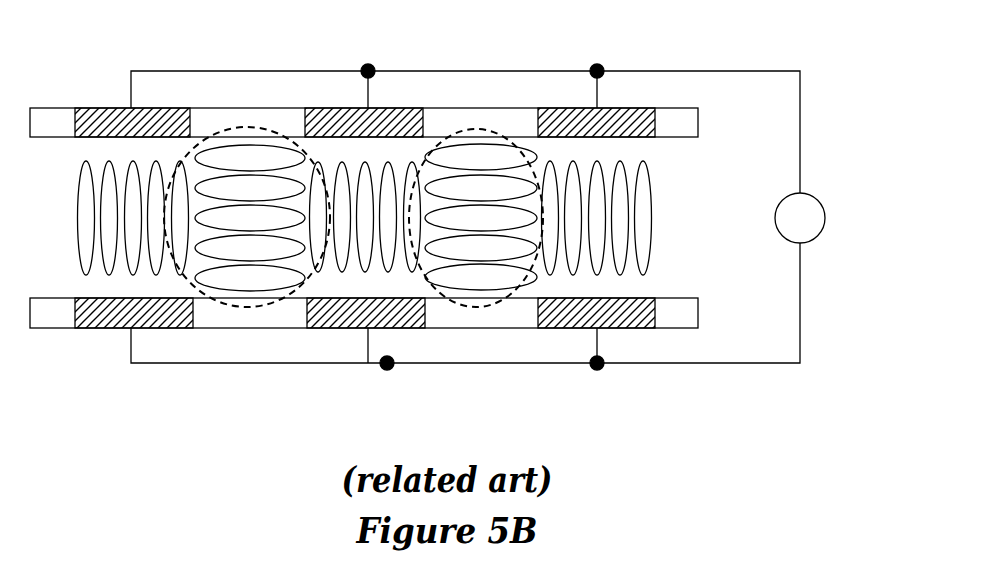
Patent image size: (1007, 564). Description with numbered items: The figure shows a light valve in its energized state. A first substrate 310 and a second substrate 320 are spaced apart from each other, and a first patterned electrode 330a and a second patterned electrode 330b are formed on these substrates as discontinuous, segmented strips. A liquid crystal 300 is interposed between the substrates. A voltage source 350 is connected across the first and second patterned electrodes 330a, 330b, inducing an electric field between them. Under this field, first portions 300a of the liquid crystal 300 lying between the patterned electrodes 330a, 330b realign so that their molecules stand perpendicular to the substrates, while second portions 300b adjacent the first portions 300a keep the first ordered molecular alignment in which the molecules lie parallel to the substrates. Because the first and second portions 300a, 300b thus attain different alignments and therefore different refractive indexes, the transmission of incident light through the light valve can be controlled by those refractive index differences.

The liquid crystal 300 is at (62, 160).
The first portions of the liquid crystal 300a is at (182, 281).
The second portions of the liquid crystal 300b is at (487, 128).
The first substrate 310 is at (400, 364).
The second substrate 320 is at (400, 76).
The first patterned electrode 330a is at (570, 108).
The second patterned electrode 330b is at (558, 328).
The voltage source 350 is at (820, 197).